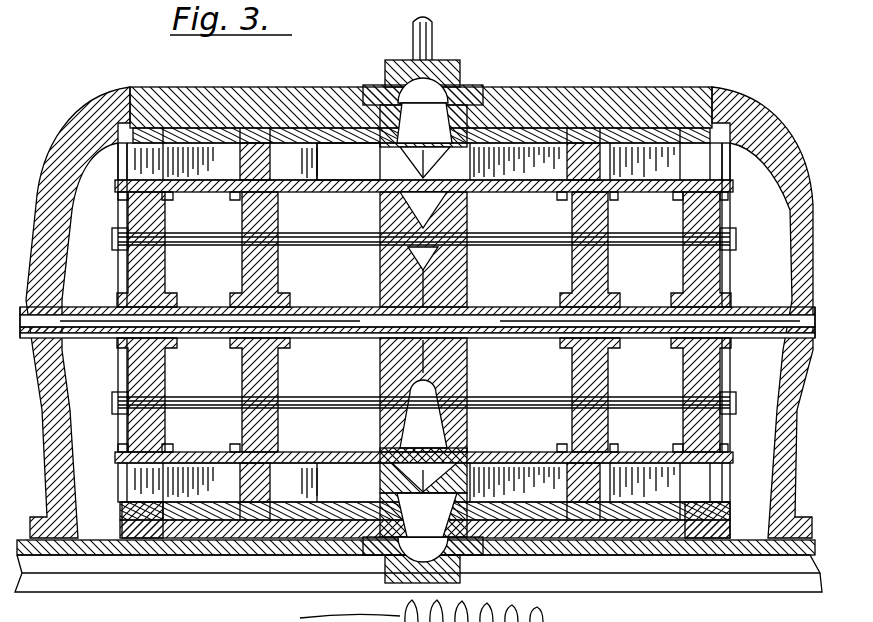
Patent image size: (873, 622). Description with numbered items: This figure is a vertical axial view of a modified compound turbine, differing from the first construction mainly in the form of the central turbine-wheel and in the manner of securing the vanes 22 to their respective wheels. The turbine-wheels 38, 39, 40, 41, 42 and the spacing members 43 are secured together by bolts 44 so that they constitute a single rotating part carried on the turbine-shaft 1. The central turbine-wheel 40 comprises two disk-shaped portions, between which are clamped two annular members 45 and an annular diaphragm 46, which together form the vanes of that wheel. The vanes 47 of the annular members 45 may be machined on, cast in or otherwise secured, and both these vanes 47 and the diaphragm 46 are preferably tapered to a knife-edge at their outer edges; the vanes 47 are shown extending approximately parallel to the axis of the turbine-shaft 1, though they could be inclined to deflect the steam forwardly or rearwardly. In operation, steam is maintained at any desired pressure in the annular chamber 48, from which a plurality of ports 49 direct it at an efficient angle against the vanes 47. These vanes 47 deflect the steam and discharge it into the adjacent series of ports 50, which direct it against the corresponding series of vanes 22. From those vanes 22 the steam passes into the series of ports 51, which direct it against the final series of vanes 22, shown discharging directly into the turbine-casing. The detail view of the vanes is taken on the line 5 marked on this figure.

The turbine-shaft 1 is at (748, 310).
The line 5 5 is at (118, 160).
The vanes 22 is at (145, 165).
The turbine-wheel 38 is at (140, 268).
The turbine-wheel 39 is at (250, 264).
The central turbine-wheel 40 is at (385, 270).
The turbine-wheel 41 is at (580, 266).
The turbine-wheel 42 is at (690, 268).
The spacing members 43 is at (197, 192).
The bolts 44 is at (112, 237).
The annular members 45 is at (400, 208).
The annular diaphragm 46 is at (440, 140).
The vanes 47 is at (395, 160).
The annular chamber 48 is at (430, 92).
The ports 49 is at (422, 125).
The ports 50 is at (320, 150).
The ports 51 is at (205, 165).